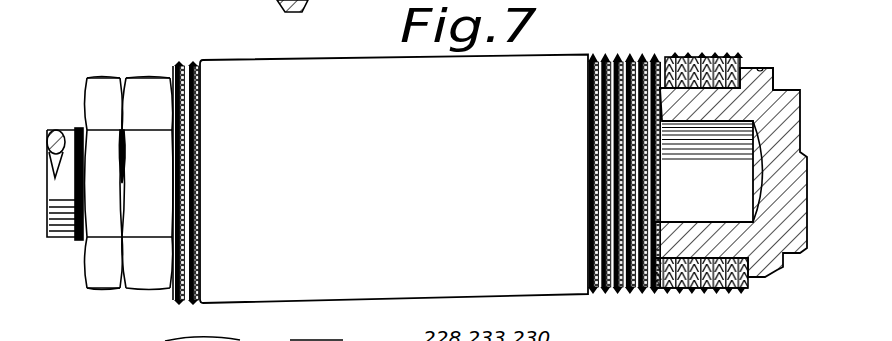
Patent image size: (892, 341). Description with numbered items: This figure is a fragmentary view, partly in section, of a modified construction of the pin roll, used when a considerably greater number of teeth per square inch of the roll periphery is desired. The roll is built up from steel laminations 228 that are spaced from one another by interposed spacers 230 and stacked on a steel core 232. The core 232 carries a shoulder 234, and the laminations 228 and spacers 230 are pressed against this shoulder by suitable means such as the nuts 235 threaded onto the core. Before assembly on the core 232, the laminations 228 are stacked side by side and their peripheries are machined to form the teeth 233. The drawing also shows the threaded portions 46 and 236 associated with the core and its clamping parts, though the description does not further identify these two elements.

The tubular body 46 is at (380, 49).
The steel laminations 228 is at (720, 290).
The spacers 230 is at (700, 291).
The steel core 232 is at (775, 207).
The teeth 233 is at (590, 174).
The shoulder 234 is at (762, 67).
The nuts 235 is at (107, 277).
The upper internal thread portion 236 is at (695, 41).